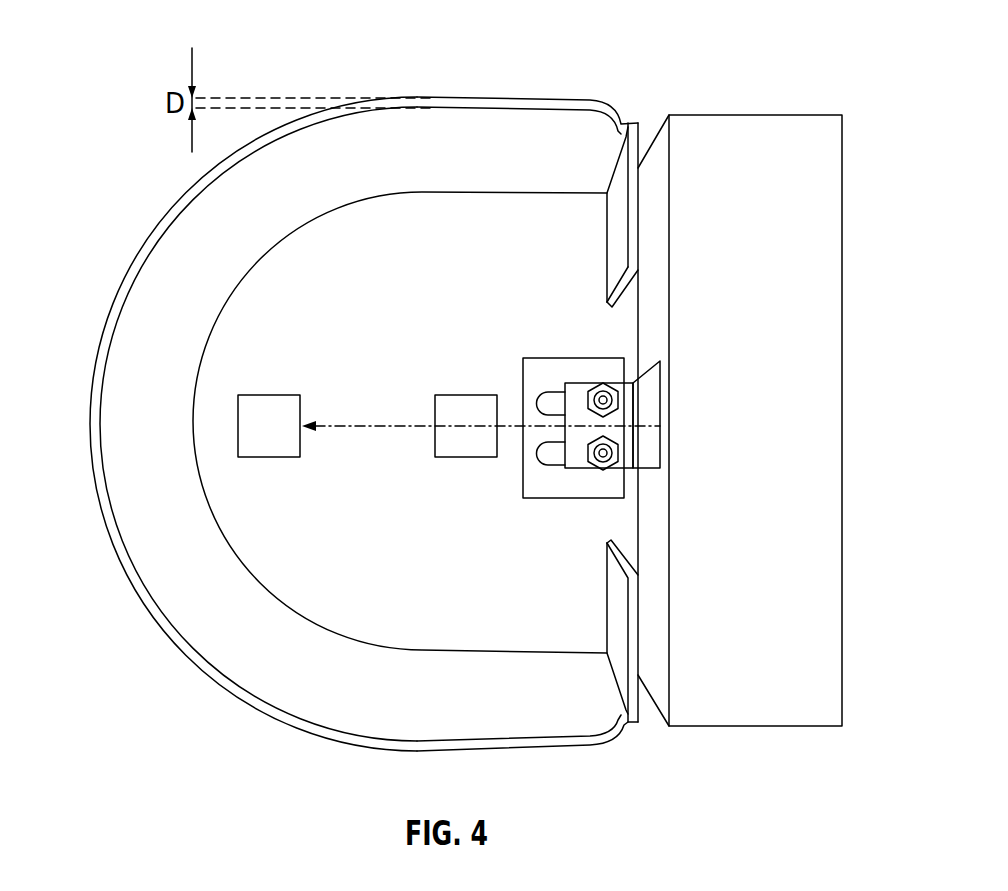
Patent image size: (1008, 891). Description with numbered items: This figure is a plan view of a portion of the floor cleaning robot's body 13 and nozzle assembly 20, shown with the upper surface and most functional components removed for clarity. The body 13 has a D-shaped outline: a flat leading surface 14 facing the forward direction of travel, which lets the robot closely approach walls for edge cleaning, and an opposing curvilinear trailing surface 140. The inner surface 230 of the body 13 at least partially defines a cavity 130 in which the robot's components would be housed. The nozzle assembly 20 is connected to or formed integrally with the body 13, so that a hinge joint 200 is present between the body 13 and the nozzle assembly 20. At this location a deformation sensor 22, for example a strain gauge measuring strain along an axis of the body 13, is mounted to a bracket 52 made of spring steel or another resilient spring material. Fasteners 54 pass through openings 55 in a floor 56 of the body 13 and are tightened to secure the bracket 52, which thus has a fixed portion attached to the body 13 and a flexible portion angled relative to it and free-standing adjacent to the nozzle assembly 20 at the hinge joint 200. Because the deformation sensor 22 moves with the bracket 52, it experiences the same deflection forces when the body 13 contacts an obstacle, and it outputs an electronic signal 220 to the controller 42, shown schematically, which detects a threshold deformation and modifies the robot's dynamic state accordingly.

The body 13 is at (777, 379).
The leading surface 14 is at (777, 420).
The nozzle assembly 20 is at (763, 426).
The deformation sensor 22 is at (481, 444).
The controller 42 is at (284, 444).
The bracket 52 is at (575, 457).
The fasteners 54 is at (603, 470).
The openings 55 is at (537, 403).
The floor 56 is at (358, 299).
The cavity 130 is at (263, 364).
The trailing surface 140 is at (137, 592).
The hinge joint 200 is at (655, 740).
The electronic signal 220 is at (345, 428).
The inner surface 230 is at (168, 297).